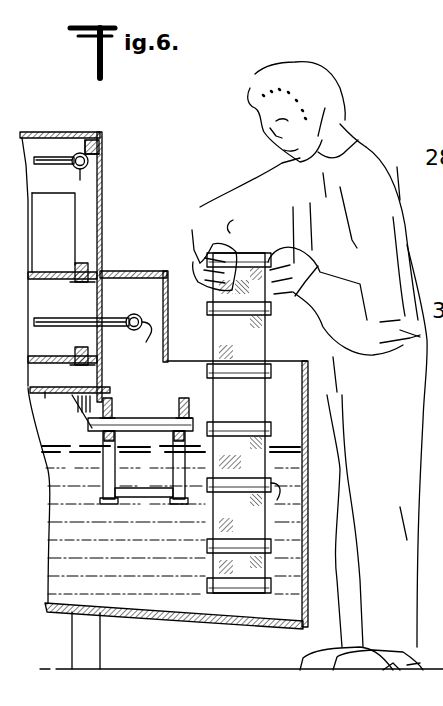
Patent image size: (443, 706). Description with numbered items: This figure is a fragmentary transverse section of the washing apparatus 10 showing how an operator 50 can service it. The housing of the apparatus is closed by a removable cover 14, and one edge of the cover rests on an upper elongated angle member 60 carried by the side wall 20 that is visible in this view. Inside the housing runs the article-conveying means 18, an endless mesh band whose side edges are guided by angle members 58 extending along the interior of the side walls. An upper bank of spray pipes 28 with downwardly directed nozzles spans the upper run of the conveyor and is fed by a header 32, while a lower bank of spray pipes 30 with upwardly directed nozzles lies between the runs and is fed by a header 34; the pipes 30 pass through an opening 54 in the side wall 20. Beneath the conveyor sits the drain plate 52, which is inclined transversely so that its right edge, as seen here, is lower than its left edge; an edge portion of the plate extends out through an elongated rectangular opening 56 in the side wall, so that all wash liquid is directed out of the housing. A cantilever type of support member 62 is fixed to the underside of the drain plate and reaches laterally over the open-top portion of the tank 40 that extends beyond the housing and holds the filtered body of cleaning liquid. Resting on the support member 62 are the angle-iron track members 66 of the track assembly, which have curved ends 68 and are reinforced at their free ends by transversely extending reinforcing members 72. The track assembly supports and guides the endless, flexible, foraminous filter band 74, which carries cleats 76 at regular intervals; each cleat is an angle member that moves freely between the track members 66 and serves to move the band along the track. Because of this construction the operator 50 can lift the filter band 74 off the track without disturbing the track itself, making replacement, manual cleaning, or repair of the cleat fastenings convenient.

The apparatus 10 is at (438, 297).
The removable cover 14 is at (76, 104).
The article-conveying means 18 is at (56, 246).
The side wall 20 is at (102, 202).
The spray pipes 28 is at (70, 160).
The spray pipes 30 is at (64, 326).
The header 32 is at (72, 195).
The header 34 is at (142, 344).
The tank 40 is at (182, 622).
The operator 50 is at (437, 345).
The drain plate 52 is at (46, 387).
The opening 54 is at (100, 308).
The opening 56 is at (100, 389).
The angle members 58 is at (73, 283).
The upper elongated angle member 60 is at (93, 147).
The cantilever support member 62 is at (87, 414).
The track members 66 is at (107, 412).
The curved ends 68 is at (110, 463).
The reinforcing members 72 is at (147, 499).
The filter band 74 is at (257, 354).
The cleats 76 is at (212, 308).